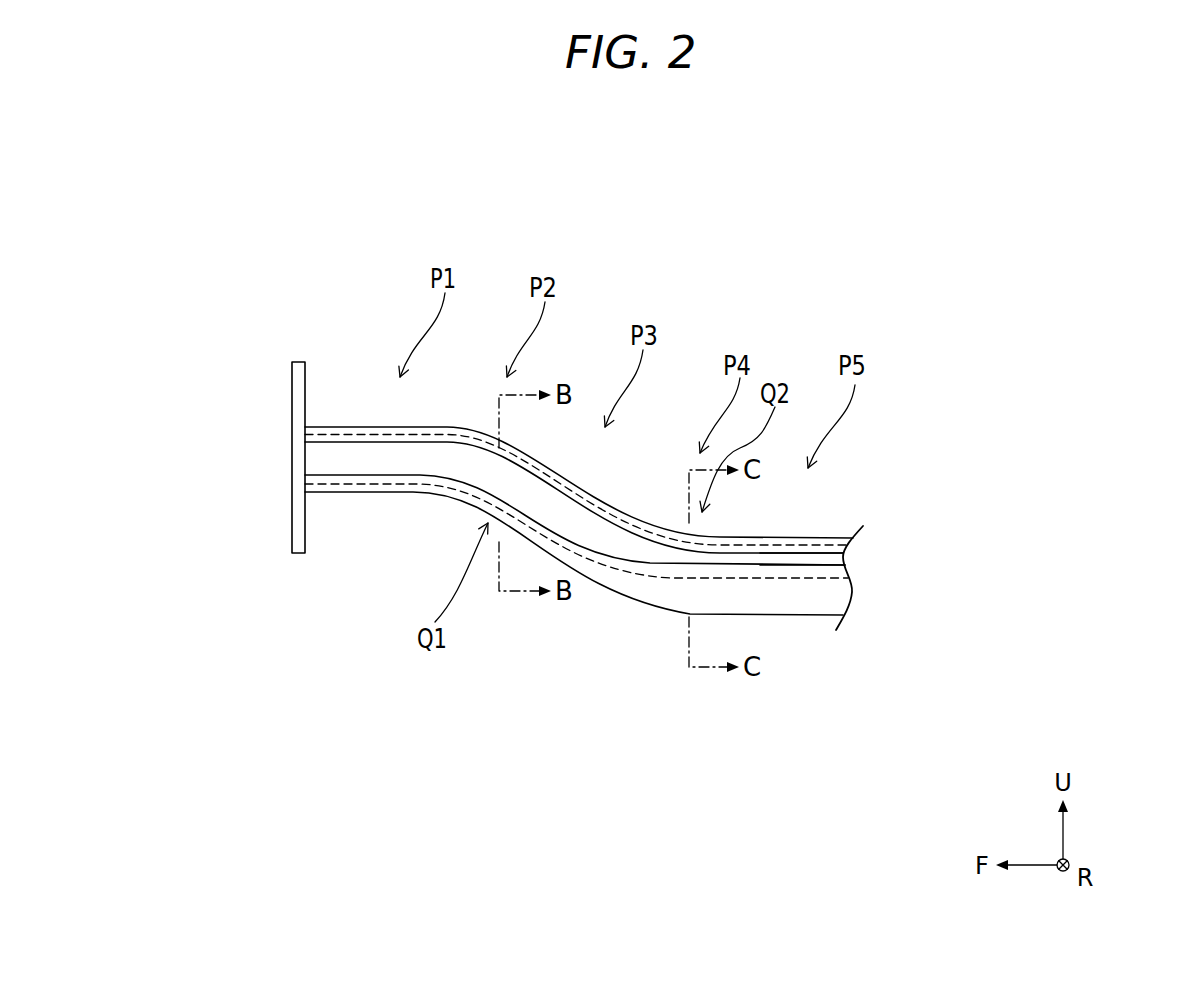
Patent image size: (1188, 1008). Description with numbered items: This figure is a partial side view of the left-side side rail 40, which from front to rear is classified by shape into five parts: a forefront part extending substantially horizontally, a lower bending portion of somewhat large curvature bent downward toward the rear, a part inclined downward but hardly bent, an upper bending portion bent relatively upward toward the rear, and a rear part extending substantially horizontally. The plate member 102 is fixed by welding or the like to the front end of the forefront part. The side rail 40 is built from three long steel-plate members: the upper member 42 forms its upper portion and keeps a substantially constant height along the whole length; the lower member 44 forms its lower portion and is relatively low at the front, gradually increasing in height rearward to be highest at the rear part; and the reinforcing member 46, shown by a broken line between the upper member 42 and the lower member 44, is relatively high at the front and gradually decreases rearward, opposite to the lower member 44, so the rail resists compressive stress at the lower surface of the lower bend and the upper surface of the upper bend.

The side rail 40 is at (640, 427).
The upper member 42 is at (827, 538).
The lower member 44 is at (805, 607).
The reinforcing member 46 is at (833, 560).
The plate member 102 is at (292, 398).